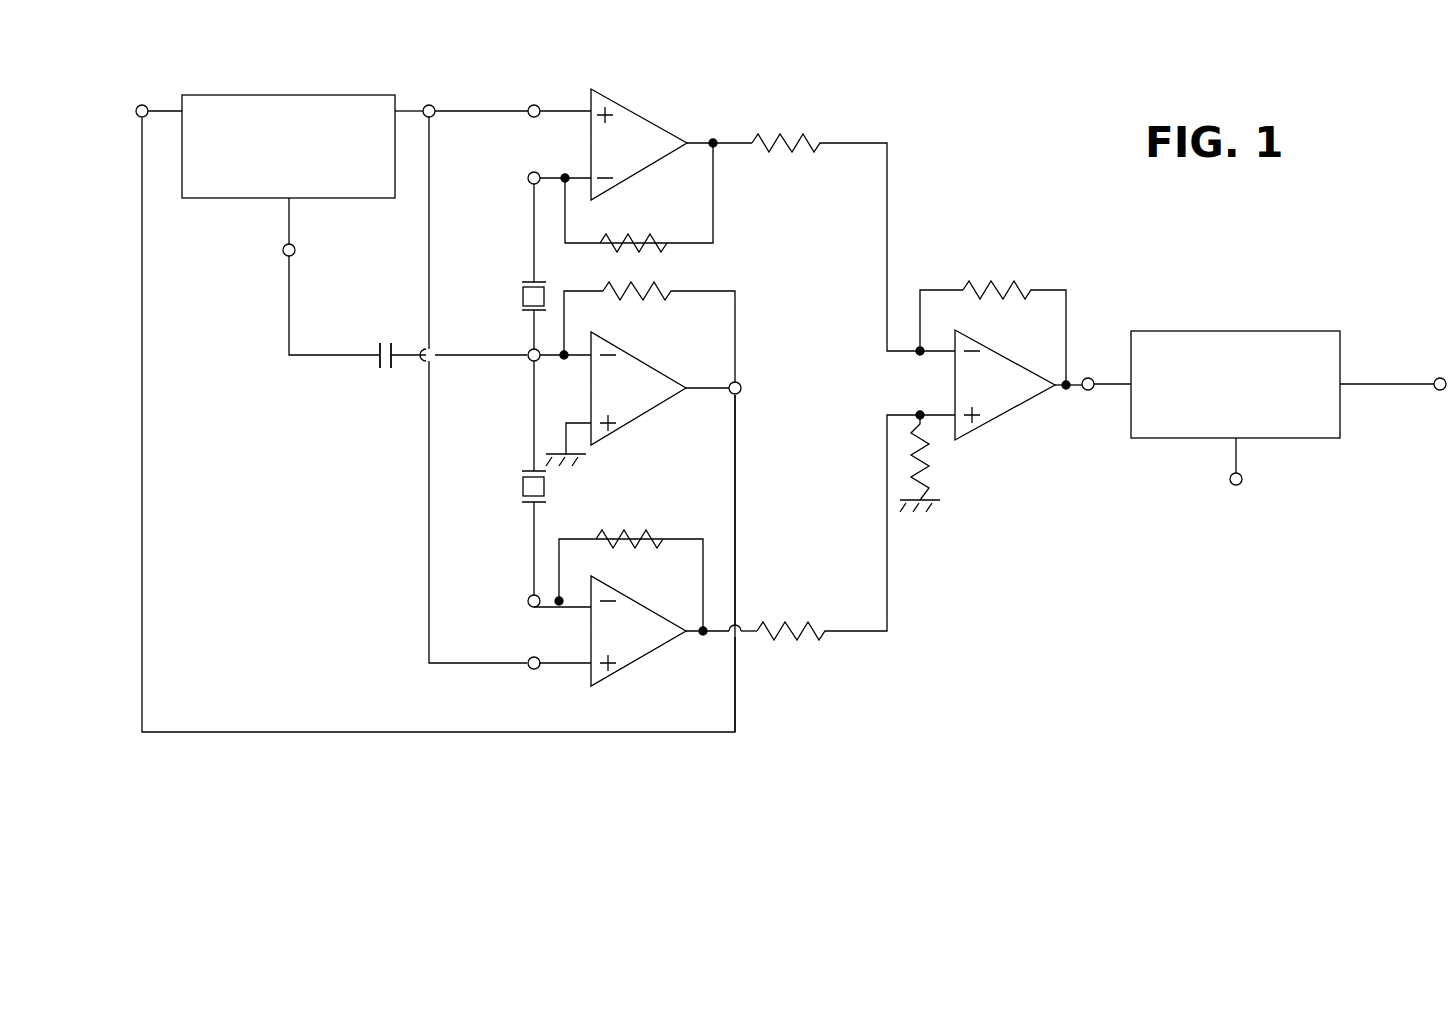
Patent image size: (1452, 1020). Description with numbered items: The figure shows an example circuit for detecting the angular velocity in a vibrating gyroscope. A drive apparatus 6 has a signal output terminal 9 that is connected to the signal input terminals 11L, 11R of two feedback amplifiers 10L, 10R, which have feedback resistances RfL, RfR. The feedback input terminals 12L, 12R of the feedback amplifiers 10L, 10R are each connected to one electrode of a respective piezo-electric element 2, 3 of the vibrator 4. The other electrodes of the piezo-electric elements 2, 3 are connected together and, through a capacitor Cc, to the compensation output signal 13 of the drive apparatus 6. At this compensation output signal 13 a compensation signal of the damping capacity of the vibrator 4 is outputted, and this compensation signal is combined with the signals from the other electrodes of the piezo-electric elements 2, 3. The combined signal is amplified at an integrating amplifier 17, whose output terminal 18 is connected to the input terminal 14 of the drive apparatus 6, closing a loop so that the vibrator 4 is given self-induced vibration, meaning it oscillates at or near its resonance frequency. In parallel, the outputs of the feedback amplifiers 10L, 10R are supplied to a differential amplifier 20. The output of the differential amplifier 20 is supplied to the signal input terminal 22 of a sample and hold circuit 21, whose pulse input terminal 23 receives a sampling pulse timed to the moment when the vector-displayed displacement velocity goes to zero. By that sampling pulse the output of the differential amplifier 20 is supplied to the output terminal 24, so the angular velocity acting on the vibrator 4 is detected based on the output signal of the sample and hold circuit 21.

The input terminal 14 is at (142, 104).
The drive apparatus 6 is at (318, 95).
The signal output terminal 9 is at (429, 104).
The signal input terminal 11L is at (534, 104).
The feedback amplifier 10L is at (647, 122).
The feedback input terminal 12L is at (527, 178).
The feedback resistance RfL is at (628, 243).
The compensation output signal 13 is at (282, 250).
The piezo-electric element 2 is at (523, 296).
The vibrator 4 is at (524, 318).
The capacitor Cc is at (388, 377).
The piezo-electric element 3 is at (523, 490).
The integrating amplifier 17 is at (658, 408).
The output terminal 18 is at (741, 388).
The feedback resistance RfR is at (624, 532).
The feedback input terminal 12R is at (527, 601).
The feedback amplifier 10R is at (638, 658).
The signal input terminal 11R is at (531, 670).
The differential amplifier 20 is at (1005, 412).
The signal input terminal 22 is at (1088, 376).
The sample and hold circuit 21 is at (1271, 331).
The pulse input terminal 23 is at (1243, 479).
The output terminal 24 is at (1440, 391).